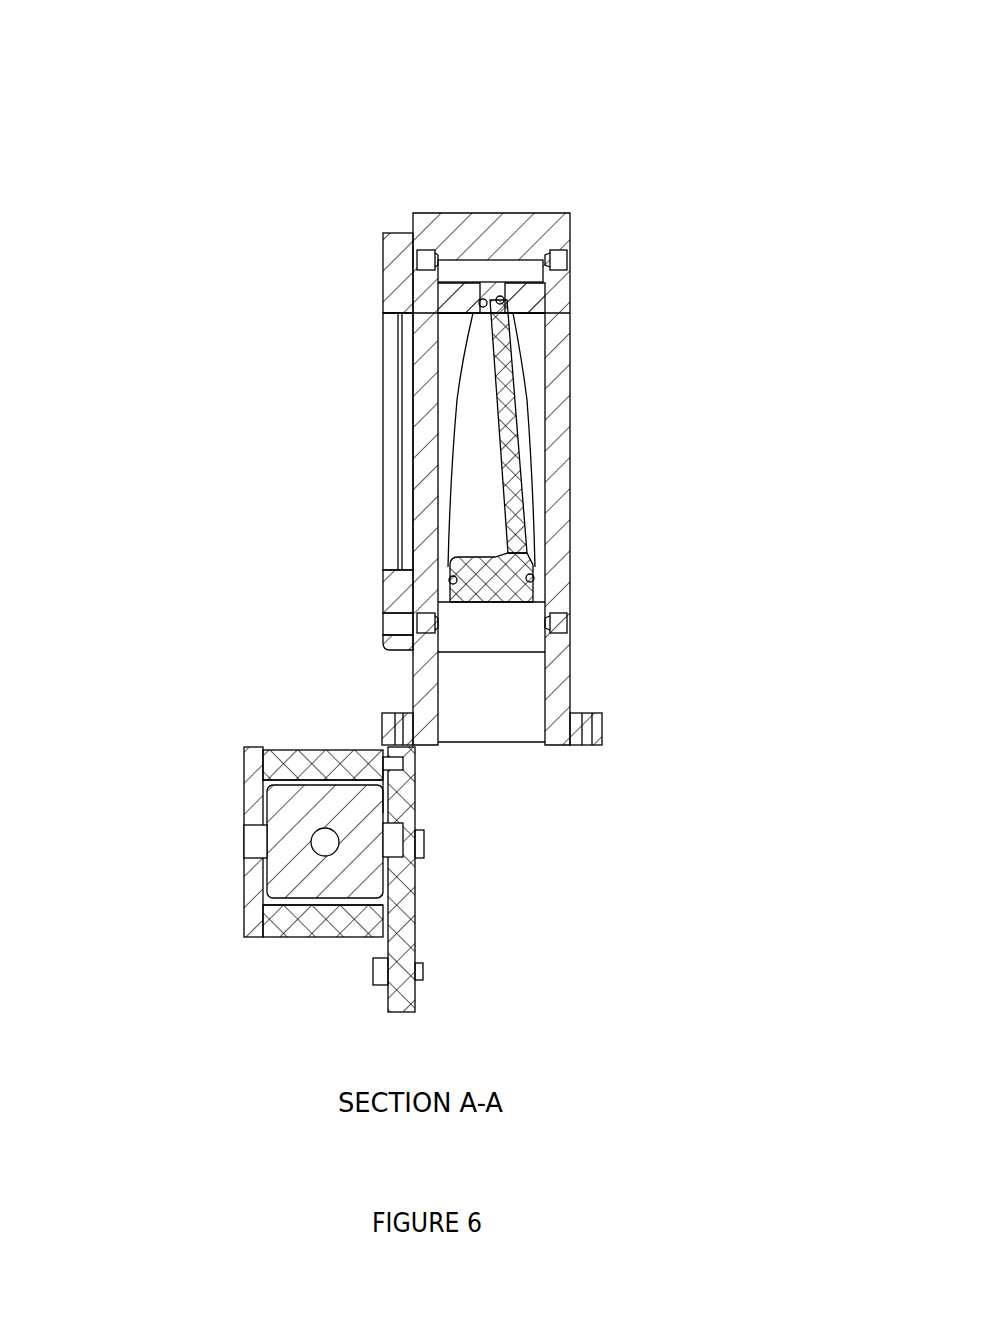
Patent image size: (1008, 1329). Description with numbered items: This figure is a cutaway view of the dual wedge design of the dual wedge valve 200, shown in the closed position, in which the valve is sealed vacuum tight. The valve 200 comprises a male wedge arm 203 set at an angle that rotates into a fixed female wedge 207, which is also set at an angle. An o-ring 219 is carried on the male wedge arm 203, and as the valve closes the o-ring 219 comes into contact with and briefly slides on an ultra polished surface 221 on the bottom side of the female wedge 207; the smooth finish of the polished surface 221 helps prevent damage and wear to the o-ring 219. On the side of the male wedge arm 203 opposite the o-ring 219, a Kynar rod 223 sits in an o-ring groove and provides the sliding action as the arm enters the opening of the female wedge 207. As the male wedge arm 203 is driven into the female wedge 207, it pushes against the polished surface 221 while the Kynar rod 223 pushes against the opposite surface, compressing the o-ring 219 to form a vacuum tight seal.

The dual wedge valve 200 is at (640, 152).
The male wedge arm 203 is at (503, 340).
The fixed female wedge 207 is at (543, 363).
The o-ring 219 is at (517, 304).
The polished surface 221 is at (552, 594).
The Kynar rod 223 is at (460, 311).